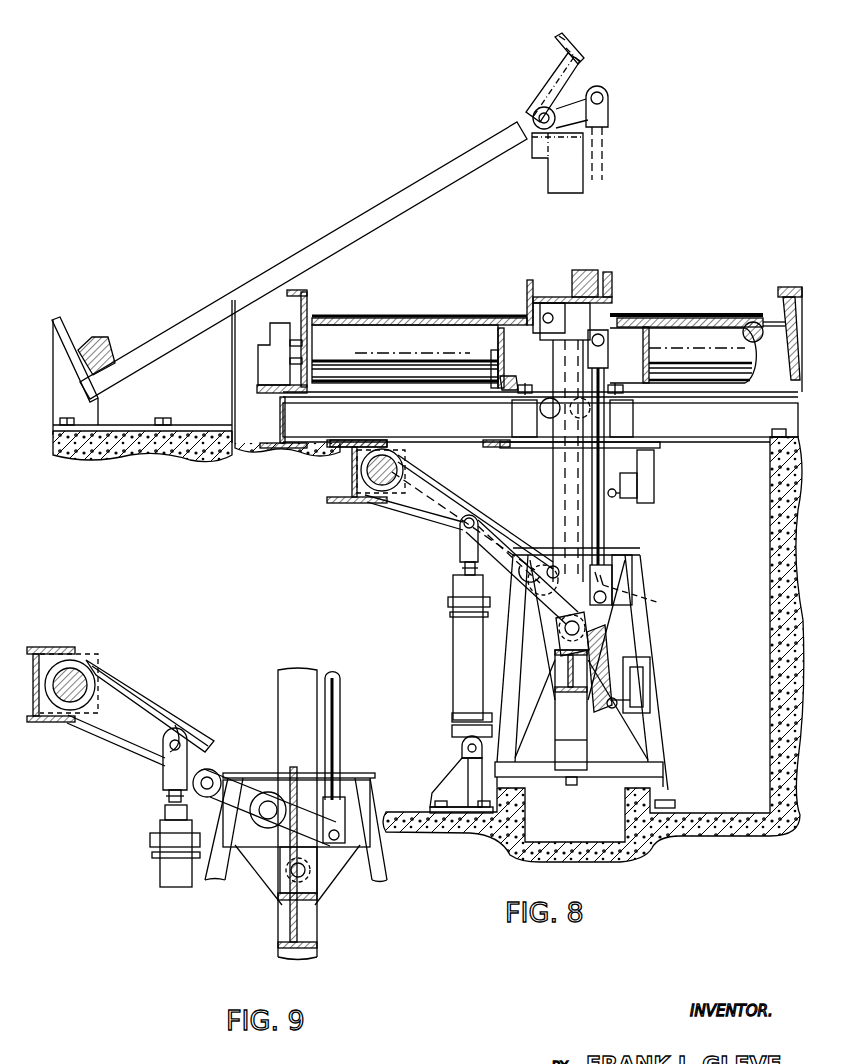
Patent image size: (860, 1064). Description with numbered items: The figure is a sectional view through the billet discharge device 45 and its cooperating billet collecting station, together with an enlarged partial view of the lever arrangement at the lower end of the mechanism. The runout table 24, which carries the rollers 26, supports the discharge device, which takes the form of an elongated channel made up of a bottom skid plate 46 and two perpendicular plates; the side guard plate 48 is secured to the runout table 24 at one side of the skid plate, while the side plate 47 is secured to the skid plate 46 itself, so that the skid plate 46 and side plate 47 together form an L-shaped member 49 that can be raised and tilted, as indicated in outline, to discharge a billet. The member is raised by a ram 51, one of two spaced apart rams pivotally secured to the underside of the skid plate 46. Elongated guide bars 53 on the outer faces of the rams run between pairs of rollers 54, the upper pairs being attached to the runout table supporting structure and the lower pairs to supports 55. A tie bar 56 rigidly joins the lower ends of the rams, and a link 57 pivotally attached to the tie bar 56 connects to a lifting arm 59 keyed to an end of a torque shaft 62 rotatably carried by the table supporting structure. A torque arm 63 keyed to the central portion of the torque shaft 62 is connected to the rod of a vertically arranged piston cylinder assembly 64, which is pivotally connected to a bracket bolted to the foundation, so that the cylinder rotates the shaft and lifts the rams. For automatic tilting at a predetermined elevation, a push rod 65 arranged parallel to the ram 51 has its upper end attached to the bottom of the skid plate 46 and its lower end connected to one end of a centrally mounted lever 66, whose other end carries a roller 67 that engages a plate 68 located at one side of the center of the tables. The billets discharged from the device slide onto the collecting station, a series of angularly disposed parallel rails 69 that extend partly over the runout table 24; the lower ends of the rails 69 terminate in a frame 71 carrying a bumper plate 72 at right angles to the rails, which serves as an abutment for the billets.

In FIG. 8, the runout table 24 is at (434, 314).
In FIG. 8, the rollers 26 is at (411, 380).
In FIG. 8, the billet discharge device 45 is at (614, 316).
In FIG. 8, the bottom skid plate 46 is at (531, 113).
In FIG. 8, the side plate 47 is at (563, 40).
In FIG. 8, the side guard plate 48 is at (526, 293).
In FIG. 8, the L-shaped member 49 is at (552, 62).
In FIG. 8, the ram 51 is at (572, 178).
In FIG. 9, the ram 51 is at (279, 692).
In FIG. 8, the guide bars 53 is at (568, 452).
In FIG. 8, the rollers 54 is at (650, 612).
In FIG. 8, the supports 55 is at (637, 577).
In FIG. 9, the supports 55 is at (386, 873).
In FIG. 8, the tie bar 56 is at (568, 670).
In FIG. 9, the tie bar 56 is at (300, 920).
In FIG. 8, the link 57 is at (565, 619).
In FIG. 8, the lifting arm 59 is at (508, 538).
In FIG. 9, the lifting arm 59 is at (200, 736).
In FIG. 8, the torque shaft 62 is at (386, 490).
In FIG. 9, the torque shaft 62 is at (76, 682).
In FIG. 8, the torque arm 63 is at (432, 507).
In FIG. 9, the torque arm 63 is at (130, 722).
In FIG. 8, the piston cylinder assembly 64 is at (455, 648).
In FIG. 9, the piston cylinder assembly 64 is at (168, 878).
In FIG. 8, the push rod 65 is at (603, 176).
In FIG. 9, the push rod 65 is at (338, 722).
In FIG. 8, the lever 66 is at (547, 578).
In FIG. 9, the lever 66 is at (300, 808).
In FIG. 8, the roller 67 is at (490, 522).
In FIG. 9, the roller 67 is at (210, 770).
In FIG. 8, the plate 68 is at (499, 390).
In FIG. 8, the rails 69 is at (334, 240).
In FIG. 8, the frame 71 is at (135, 418).
In FIG. 8, the bumper plate 72 is at (90, 328).